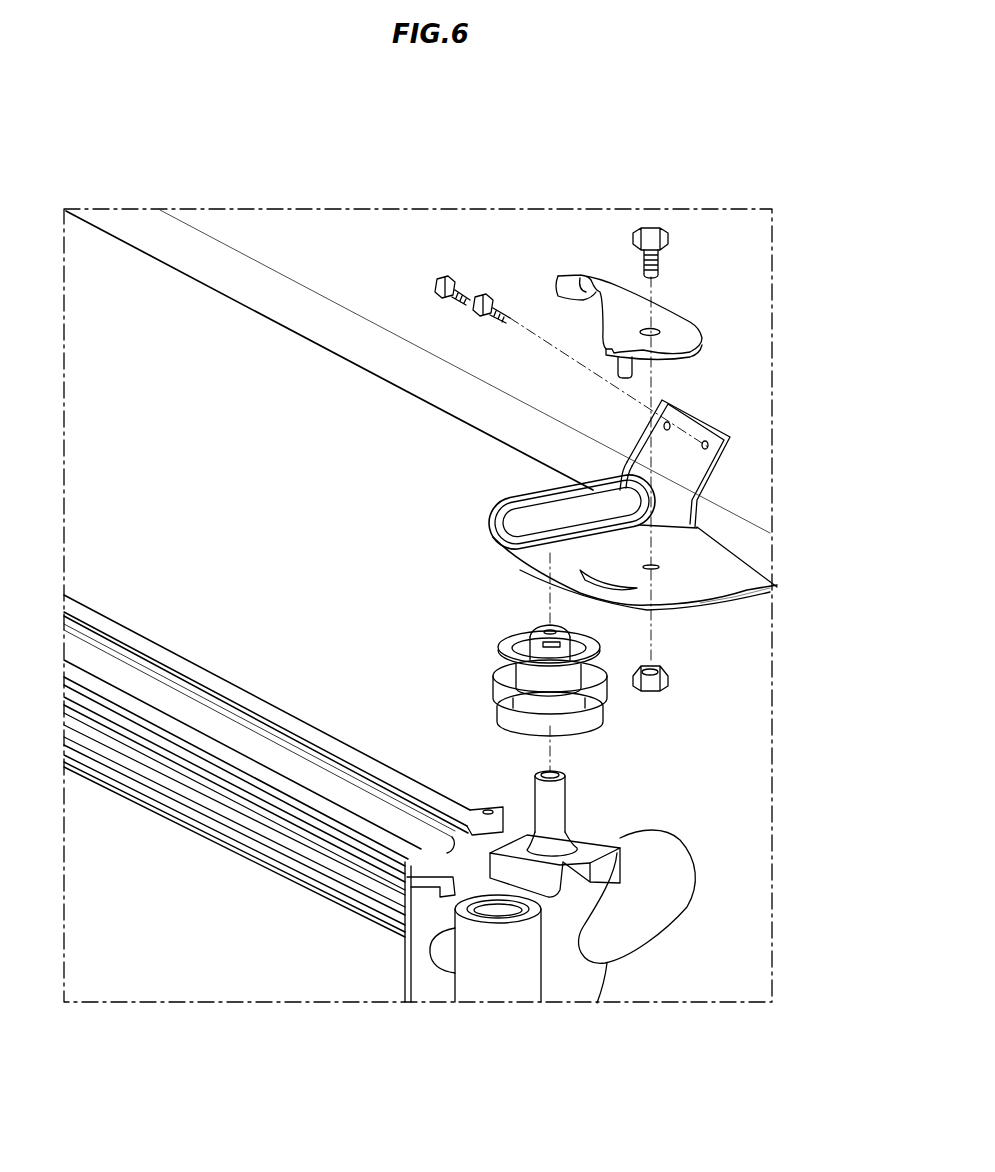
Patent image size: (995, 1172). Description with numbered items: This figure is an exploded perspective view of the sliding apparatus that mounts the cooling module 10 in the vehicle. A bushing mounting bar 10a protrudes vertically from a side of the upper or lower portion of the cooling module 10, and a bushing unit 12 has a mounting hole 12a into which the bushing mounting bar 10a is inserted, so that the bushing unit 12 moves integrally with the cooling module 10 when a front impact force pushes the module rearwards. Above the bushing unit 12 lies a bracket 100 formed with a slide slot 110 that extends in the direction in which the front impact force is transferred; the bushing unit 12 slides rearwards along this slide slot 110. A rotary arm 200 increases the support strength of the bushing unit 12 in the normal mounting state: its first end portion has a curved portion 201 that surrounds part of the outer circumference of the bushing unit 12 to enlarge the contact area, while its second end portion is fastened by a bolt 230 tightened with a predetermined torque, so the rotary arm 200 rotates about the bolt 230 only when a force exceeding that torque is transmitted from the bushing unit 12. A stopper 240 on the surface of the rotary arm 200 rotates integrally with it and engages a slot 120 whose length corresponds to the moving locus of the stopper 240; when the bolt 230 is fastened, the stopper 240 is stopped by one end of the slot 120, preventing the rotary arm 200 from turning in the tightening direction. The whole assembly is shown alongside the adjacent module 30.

The cooling module 10 is at (120, 640).
The bushing mounting bar 10a is at (553, 807).
The bushing unit 12 is at (498, 644).
The mounting hole 12a is at (581, 714).
The condenser 30 is at (393, 228).
The bracket 100 is at (618, 443).
The slide slot 110 is at (532, 524).
The slot 120 is at (765, 590).
The rotary arm 200 is at (702, 279).
The curved portion 201 is at (588, 275).
The bolt 230 is at (651, 228).
The stopper 240 is at (634, 378).